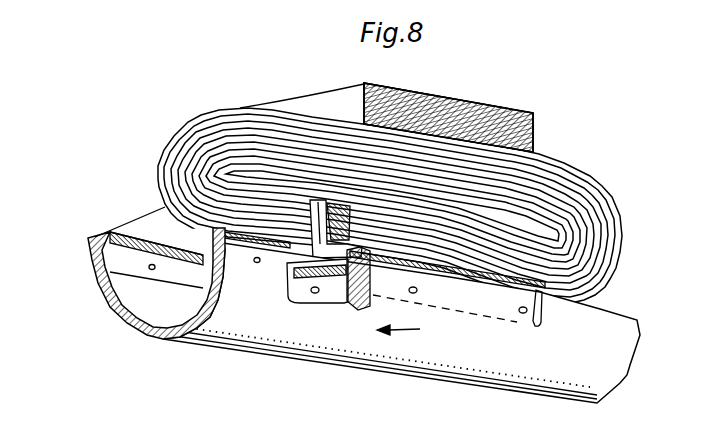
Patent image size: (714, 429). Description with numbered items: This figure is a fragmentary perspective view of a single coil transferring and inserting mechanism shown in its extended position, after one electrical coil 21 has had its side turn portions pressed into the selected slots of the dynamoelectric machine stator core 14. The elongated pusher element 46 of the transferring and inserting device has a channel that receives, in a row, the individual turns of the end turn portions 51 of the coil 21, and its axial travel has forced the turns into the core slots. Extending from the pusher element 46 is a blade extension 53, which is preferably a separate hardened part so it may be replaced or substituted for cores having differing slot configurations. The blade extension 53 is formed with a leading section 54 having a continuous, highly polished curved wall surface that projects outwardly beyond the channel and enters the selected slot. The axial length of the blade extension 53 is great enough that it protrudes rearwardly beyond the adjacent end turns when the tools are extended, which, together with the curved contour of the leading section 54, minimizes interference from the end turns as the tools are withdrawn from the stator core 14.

The stator core 14 is at (579, 139).
The electrical coil 21 is at (565, 178).
The pusher element 46 is at (127, 323).
The end turn portions 51 is at (557, 298).
The blade extension 53 is at (120, 253).
The leading section 54 is at (537, 290).